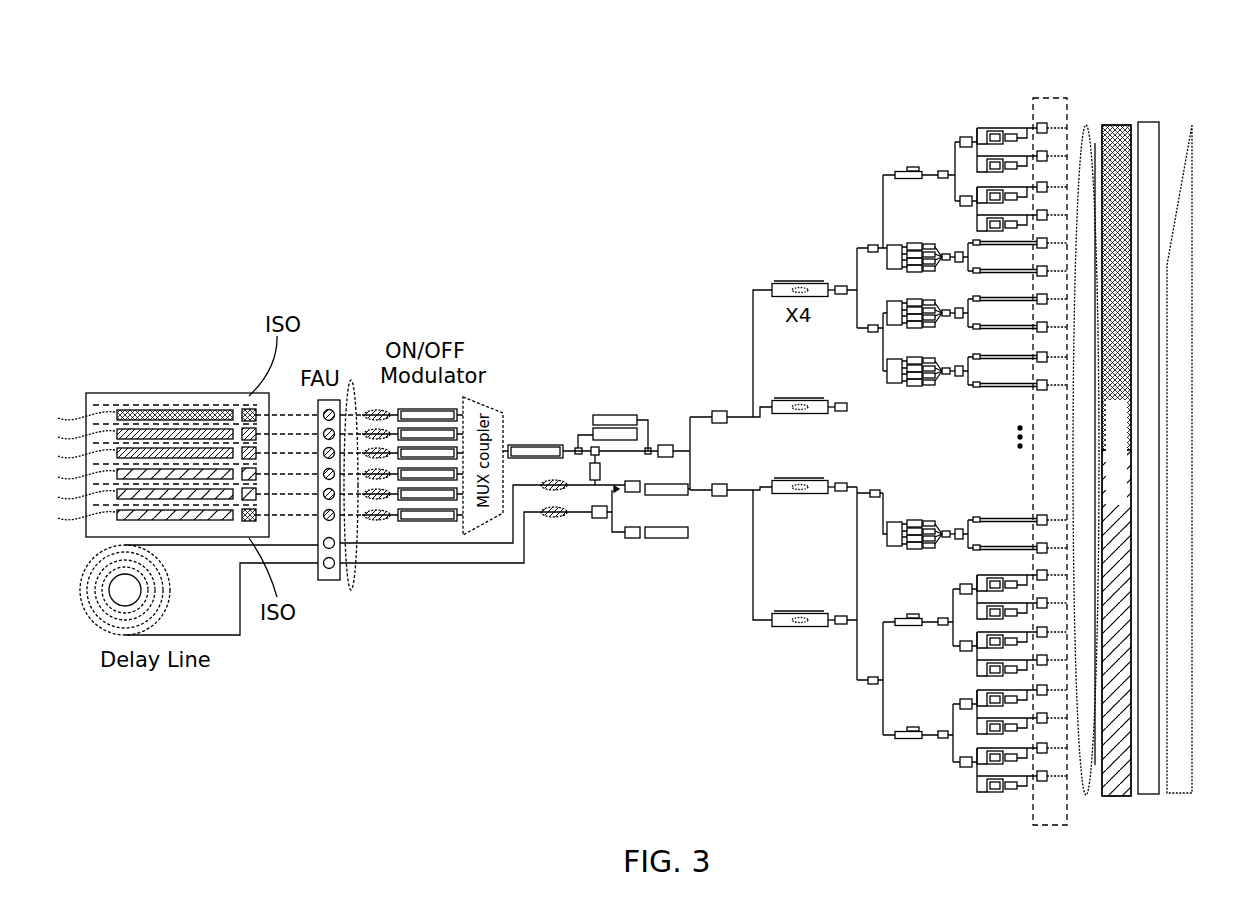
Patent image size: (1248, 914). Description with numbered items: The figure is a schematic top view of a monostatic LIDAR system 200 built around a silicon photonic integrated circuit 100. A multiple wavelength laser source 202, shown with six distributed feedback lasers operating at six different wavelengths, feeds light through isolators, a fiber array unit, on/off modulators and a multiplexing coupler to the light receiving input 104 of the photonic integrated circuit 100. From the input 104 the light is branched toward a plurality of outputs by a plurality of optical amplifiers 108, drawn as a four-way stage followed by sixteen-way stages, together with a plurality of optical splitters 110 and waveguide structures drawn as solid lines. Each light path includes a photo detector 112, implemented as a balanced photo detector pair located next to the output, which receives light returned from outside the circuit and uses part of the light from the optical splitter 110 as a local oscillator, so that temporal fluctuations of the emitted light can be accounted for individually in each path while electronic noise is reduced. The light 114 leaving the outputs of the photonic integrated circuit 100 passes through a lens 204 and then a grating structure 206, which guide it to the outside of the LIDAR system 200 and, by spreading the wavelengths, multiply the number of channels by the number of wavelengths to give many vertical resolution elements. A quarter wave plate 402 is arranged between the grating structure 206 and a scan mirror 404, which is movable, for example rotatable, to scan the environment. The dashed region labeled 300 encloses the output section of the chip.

The photonic integrated circuit 100 is at (951, 423).
The light receiving input 104 is at (528, 444).
The optical amplifier 108 is at (790, 280).
The optical splitter 110 is at (1043, 122).
The photo detector 112 is at (992, 125).
The light 114 is at (1048, 796).
The LIDAR system 200 is at (1155, 446).
The multiple wavelength laser source 202 is at (210, 357).
The lens 204 is at (1083, 125).
The grating structure 206 is at (1115, 797).
The photonic integrated circuit 300 is at (1045, 437).
The quarter wave plate 402 is at (1148, 121).
The scan mirror 404 is at (1166, 795).